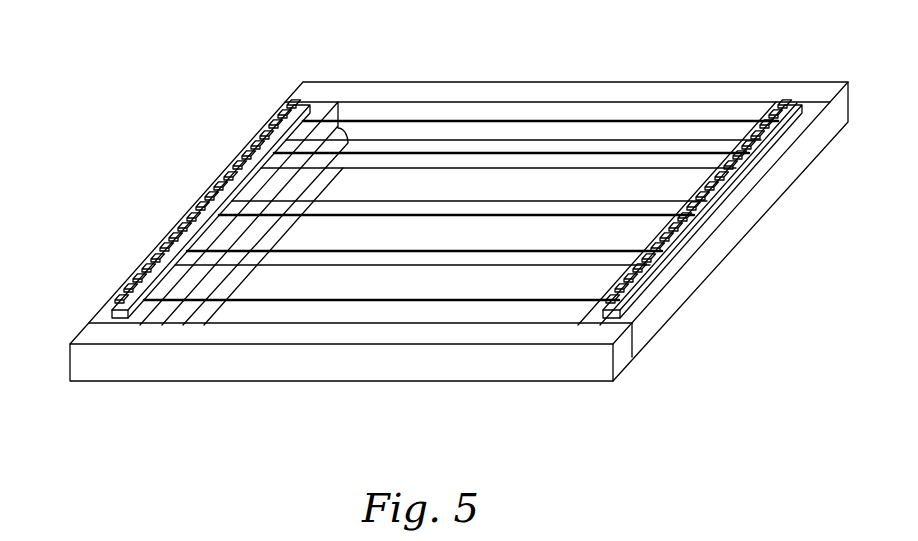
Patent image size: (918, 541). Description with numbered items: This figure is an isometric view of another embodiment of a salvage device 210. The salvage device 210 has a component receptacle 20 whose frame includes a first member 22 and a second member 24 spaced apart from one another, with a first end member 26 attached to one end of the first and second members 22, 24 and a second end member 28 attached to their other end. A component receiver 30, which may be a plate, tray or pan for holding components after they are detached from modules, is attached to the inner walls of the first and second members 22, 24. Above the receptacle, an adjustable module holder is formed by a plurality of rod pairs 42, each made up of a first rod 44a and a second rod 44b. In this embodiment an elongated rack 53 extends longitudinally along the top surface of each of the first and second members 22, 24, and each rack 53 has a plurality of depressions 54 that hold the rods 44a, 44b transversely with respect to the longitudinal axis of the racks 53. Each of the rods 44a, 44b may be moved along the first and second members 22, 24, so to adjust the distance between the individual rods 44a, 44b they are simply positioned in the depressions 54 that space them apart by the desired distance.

The component receptacle 20 is at (362, 127).
The first member 22 is at (198, 212).
The second member 24 is at (743, 225).
The first end member 26 is at (543, 373).
The second end member 28 is at (610, 92).
The component receiver 30 is at (600, 244).
The rod pairs 42 is at (260, 131).
The first rod 44a is at (443, 202).
The second rod 44b is at (511, 121).
The elongated rack 53 is at (115, 318).
The depressions 54 is at (165, 260).
The salvage device 210 is at (758, 343).